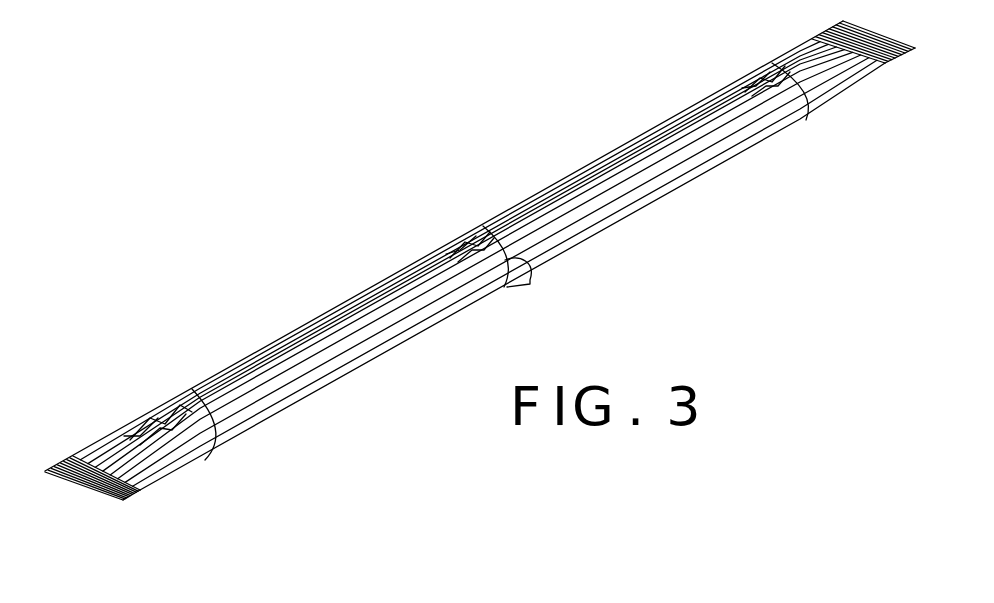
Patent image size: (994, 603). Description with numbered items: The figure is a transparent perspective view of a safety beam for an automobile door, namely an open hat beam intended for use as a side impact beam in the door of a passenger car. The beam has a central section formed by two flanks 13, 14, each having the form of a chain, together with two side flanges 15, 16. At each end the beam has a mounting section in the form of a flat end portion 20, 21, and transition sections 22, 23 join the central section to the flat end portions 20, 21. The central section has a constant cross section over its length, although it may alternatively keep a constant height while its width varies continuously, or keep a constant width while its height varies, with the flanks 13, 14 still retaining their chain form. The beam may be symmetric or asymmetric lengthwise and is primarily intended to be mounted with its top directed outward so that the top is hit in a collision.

The flank 13 is at (453, 240).
The flank 14 is at (512, 260).
The side flange 15 is at (112, 440).
The side flange 16 is at (308, 402).
The flat end portion 20 is at (130, 502).
The flat end portion 21 is at (899, 66).
The transition section 22 is at (190, 441).
The transition section 23 is at (815, 90).